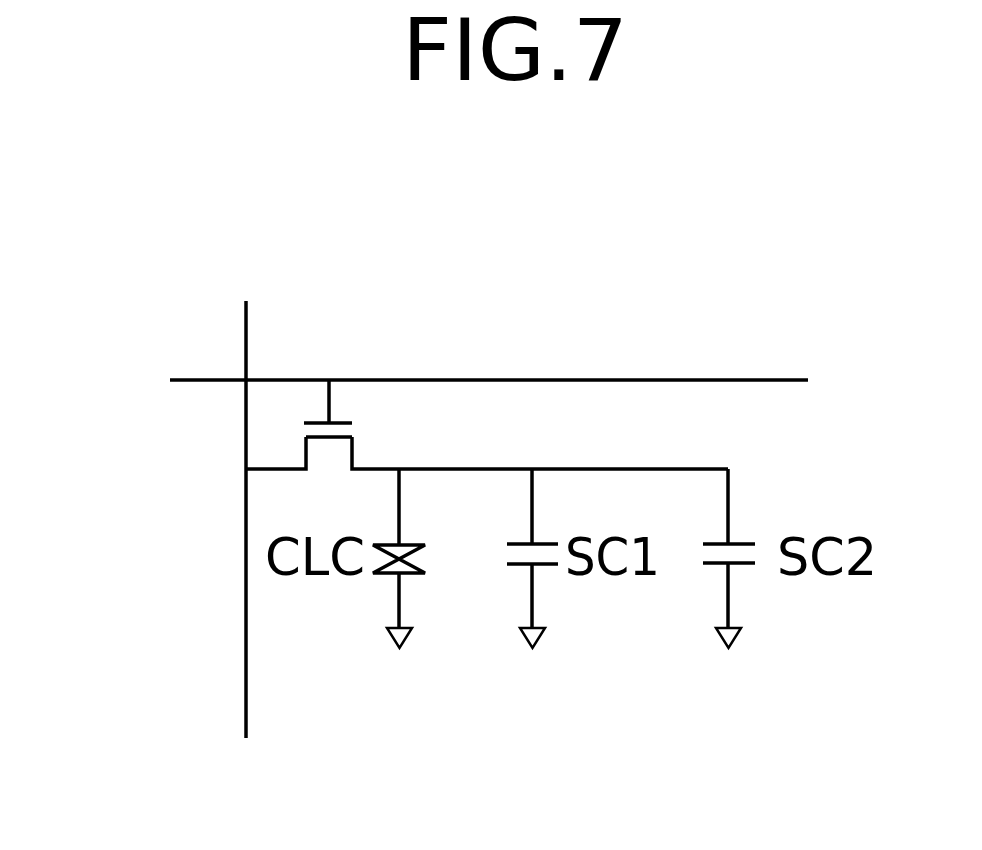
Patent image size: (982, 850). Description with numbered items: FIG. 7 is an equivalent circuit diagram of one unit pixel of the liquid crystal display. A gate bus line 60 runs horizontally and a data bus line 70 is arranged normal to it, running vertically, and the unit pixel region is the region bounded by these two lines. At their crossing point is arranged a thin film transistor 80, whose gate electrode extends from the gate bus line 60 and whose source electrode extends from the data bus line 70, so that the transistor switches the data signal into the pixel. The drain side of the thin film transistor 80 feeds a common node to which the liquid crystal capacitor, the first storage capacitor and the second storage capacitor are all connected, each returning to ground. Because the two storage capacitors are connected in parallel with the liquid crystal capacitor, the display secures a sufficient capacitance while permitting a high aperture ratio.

The gate bus line 60 is at (718, 380).
The data bus line 70 is at (246, 630).
The thin film transistor 80 is at (380, 428).